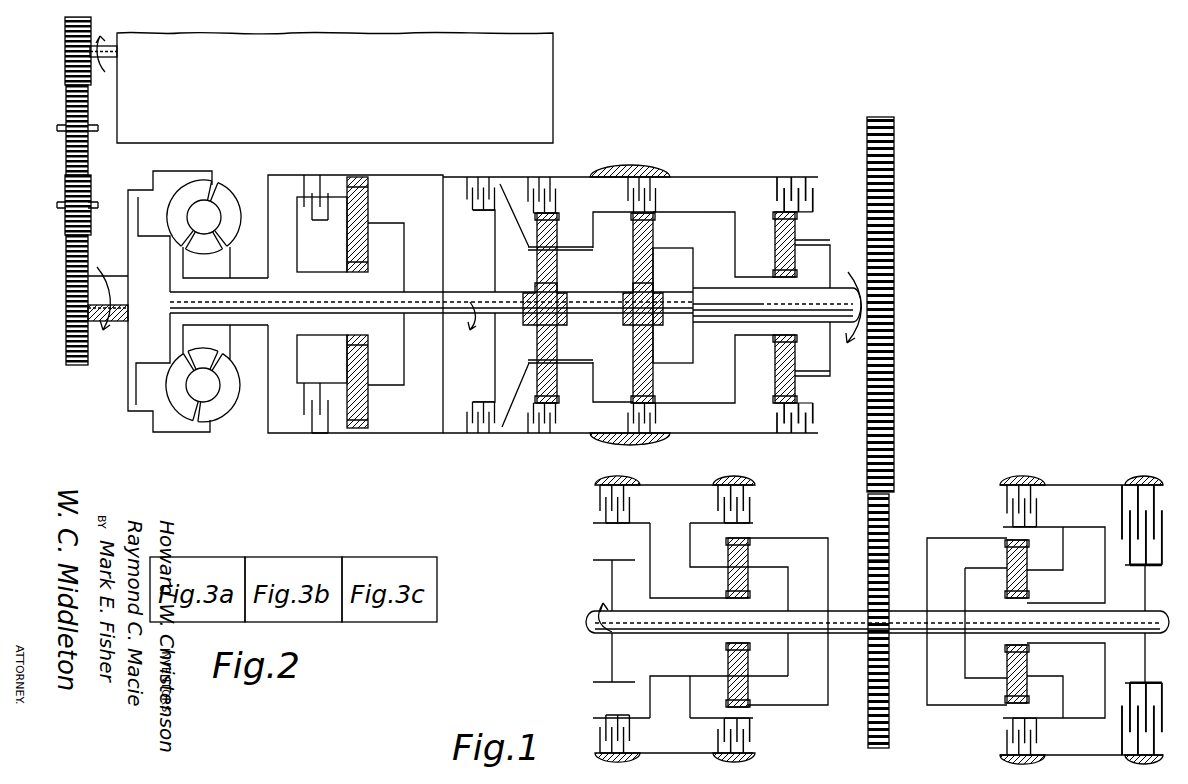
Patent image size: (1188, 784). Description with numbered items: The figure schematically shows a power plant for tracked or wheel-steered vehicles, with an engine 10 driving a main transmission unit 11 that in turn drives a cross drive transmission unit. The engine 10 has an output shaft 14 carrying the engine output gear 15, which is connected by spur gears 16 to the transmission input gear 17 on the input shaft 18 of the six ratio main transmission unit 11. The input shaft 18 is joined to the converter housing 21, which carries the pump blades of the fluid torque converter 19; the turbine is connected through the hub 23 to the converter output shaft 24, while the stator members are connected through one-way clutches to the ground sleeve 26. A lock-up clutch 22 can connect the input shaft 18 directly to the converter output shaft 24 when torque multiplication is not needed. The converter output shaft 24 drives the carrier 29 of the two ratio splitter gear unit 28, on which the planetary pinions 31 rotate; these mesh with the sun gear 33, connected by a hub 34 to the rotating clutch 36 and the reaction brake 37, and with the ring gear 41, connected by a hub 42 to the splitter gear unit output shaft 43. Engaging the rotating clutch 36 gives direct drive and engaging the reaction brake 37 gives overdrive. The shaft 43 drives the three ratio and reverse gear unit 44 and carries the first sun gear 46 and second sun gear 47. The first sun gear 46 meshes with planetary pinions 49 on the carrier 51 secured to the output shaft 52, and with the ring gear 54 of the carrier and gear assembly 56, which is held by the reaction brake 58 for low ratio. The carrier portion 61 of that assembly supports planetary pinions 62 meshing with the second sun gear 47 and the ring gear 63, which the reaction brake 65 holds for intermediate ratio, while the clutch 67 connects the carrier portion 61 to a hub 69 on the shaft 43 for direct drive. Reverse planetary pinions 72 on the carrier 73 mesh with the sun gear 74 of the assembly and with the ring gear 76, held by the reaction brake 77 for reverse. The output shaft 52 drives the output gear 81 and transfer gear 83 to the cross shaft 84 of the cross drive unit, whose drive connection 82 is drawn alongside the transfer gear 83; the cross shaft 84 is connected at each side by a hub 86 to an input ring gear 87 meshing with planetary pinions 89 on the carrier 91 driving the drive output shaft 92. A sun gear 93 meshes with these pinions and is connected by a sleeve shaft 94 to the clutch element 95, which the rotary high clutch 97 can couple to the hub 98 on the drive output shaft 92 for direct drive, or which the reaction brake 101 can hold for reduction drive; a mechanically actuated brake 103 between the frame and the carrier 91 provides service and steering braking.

The engine 10 is at (399, 58).
The main transmission unit 11 is at (436, 444).
The output shaft 14 is at (100, 42).
The engine output gear 15 is at (66, 70).
The spur gears 16 is at (66, 182).
The transmission input gear 17 is at (66, 302).
The input shaft 18 is at (113, 325).
The fluid torque converter 19 is at (121, 412).
The converter housing 21 is at (198, 433).
The lock-up clutch 22 is at (128, 385).
The hub 23 is at (172, 338).
The converter output shaft 24 is at (292, 298).
The ground sleeve 26 is at (244, 278).
The splitter gear unit 28 is at (343, 169).
The carrier 29 is at (404, 262).
The planetary pinions 31 is at (368, 207).
The sun gear 33 is at (347, 262).
The hub 34 is at (306, 236).
The rotating clutch 36 is at (306, 214).
The reaction brake 37 is at (304, 186).
The ring gear 41 is at (366, 178).
The hub 42 is at (495, 228).
The splitter gear unit output shaft 43 is at (568, 325).
The three ratio and reverse gear unit 44 is at (684, 169).
The first sun gear 46 is at (650, 298).
The second sun gear 47 is at (558, 292).
The planetary pinions 49 is at (653, 240).
The carrier 51 is at (695, 262).
The output shaft 52 is at (722, 300).
The ring gear 54 is at (657, 210).
The carrier and gear assembly 56 is at (716, 216).
The reaction brake 58 is at (642, 175).
The carrier portion 61 is at (578, 252).
The planetary pinions 62 is at (537, 268).
The ring gear 63 is at (556, 207).
The reaction brake 65 is at (538, 185).
The clutch 67 is at (486, 186).
The hub 69 is at (495, 266).
The reverse planetary pinions 72 is at (795, 226).
The carrier 73 is at (830, 245).
The sun gear 74 is at (794, 285).
The ring gear 76 is at (775, 214).
The reaction brake 77 is at (808, 178).
The output gear 81 is at (894, 190).
The chain 82 is at (889, 535).
The transfer gear 83 is at (868, 535).
The cross shaft 84 is at (907, 610).
The hub 86 is at (828, 567).
The input ring gear 87 is at (1007, 542).
The planetary pinions 89 is at (728, 545).
The carrier 91 is at (966, 572).
The drive output shaft 92 is at (636, 615).
The sun gear 93 is at (728, 590).
The sleeve shaft 94 is at (660, 597).
The clutch element 95 is at (652, 535).
The rotary high clutch 97 is at (597, 542).
The hub 98 is at (607, 578).
The reaction brake 101 is at (600, 495).
The brake 103 is at (745, 507).